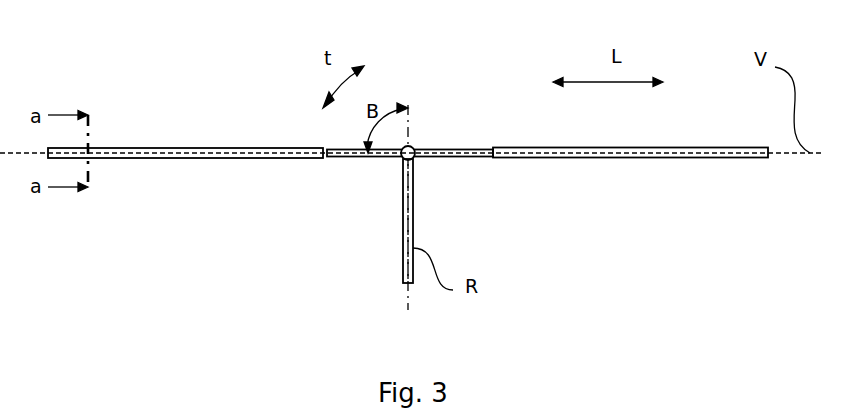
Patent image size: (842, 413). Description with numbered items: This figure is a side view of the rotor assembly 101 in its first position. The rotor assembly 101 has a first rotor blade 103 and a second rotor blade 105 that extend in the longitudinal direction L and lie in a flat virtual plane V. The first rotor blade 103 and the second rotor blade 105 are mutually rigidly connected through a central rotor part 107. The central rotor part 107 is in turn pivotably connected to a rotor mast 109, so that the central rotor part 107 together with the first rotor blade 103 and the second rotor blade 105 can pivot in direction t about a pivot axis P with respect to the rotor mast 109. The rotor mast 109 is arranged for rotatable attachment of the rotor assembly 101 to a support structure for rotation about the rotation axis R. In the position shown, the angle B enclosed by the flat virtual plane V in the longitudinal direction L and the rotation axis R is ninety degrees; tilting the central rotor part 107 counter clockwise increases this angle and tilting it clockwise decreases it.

The rotor assembly 101 is at (230, 65).
The first rotor blade 103 is at (230, 150).
The second rotor blade 105 is at (603, 157).
The central rotor part 107 is at (443, 158).
The rotor mast 109 is at (403, 235).